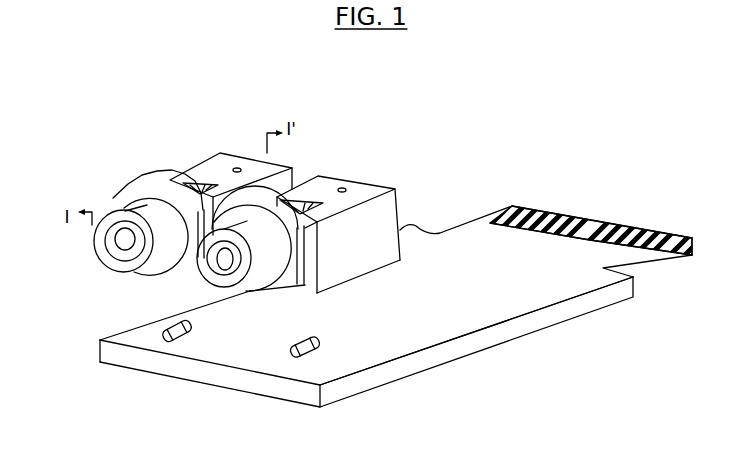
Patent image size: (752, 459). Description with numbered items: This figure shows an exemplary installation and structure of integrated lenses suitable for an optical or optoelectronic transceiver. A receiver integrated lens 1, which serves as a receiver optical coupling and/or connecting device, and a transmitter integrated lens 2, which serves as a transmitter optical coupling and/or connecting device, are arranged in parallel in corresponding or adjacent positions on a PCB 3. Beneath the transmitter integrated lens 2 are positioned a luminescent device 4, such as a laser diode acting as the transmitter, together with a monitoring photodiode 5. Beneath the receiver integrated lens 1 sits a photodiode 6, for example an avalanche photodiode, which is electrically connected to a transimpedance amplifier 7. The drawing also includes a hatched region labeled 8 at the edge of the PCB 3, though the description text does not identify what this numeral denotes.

The receiver integrated lens 1 is at (303, 190).
The transmitter integrated lens 2 is at (220, 153).
The PCB 3 is at (465, 253).
The luminescent device 4 is at (170, 323).
The monitoring photodiode 5 is at (100, 362).
The photodiode 6 is at (290, 357).
The transimpedance amplifier 7 is at (323, 345).
The edge connector contact pads 8 is at (608, 215).